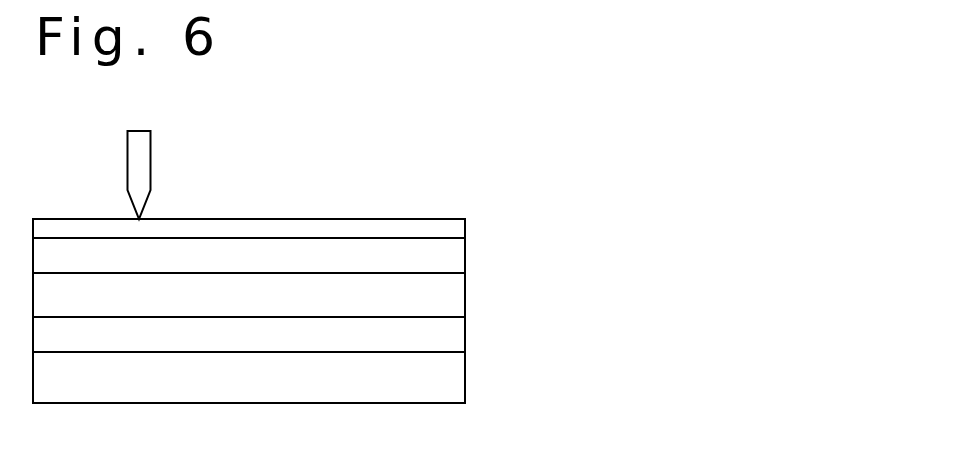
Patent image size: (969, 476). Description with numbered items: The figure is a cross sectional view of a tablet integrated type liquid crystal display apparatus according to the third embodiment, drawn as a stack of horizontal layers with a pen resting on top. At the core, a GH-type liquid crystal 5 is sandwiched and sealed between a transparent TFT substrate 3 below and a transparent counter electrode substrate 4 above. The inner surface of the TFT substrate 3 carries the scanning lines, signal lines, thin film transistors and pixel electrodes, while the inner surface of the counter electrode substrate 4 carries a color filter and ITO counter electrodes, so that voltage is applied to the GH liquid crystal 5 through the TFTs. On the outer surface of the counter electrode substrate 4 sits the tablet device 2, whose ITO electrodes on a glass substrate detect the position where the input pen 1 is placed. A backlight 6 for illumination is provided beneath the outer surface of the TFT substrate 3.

The input pen 1 is at (151, 166).
The tablet device 2 is at (378, 218).
The TFT substrate 3 is at (465, 331).
The counter electrode substrate 4 is at (465, 250).
The GH-type liquid crystal 5 is at (465, 287).
The backlight 6 is at (465, 377).